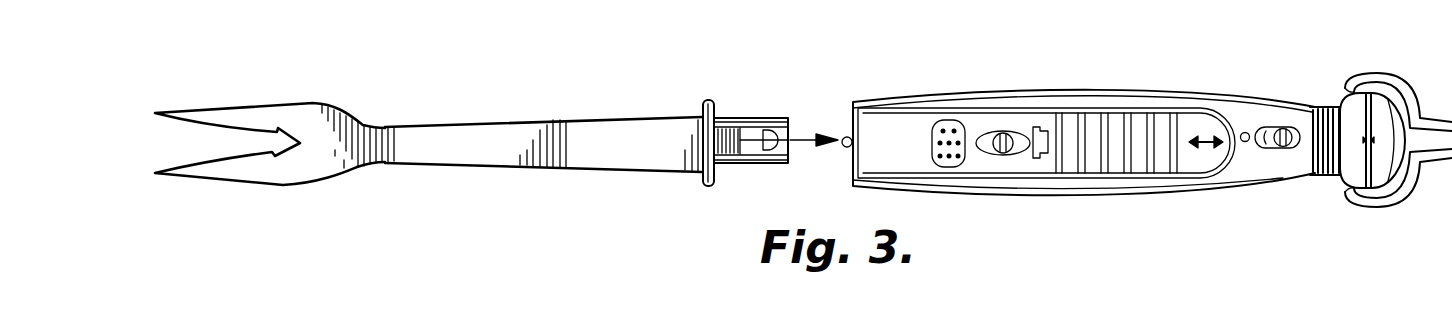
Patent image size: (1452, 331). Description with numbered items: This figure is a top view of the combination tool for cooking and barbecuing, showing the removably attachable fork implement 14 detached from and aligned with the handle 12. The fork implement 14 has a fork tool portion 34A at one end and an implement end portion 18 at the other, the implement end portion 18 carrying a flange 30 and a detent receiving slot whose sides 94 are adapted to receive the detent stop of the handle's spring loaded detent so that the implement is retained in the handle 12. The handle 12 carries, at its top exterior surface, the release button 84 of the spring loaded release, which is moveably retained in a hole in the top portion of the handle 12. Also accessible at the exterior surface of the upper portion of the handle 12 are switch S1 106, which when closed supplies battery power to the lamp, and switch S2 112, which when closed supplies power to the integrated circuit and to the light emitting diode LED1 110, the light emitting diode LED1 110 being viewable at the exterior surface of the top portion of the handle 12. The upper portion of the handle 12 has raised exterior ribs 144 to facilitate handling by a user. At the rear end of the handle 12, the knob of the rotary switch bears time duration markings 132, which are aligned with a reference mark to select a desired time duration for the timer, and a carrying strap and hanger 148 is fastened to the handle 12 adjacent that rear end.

The handle 12 is at (1246, 92).
The removably attachable fork implement 14 is at (566, 115).
The implement end portion 18 is at (735, 165).
The flange 30 is at (707, 188).
The fork tool portion 34A is at (313, 105).
The release button 84 is at (950, 120).
The sides 94 is at (765, 128).
The switch S1 106 is at (1003, 134).
The light emitting diode LED1 110 is at (1245, 143).
The switch S2 112 is at (1290, 150).
The time duration markings 132 is at (1393, 182).
The raised exterior ribs 144 is at (1046, 178).
The carrying strap and hanger 148 is at (1375, 73).